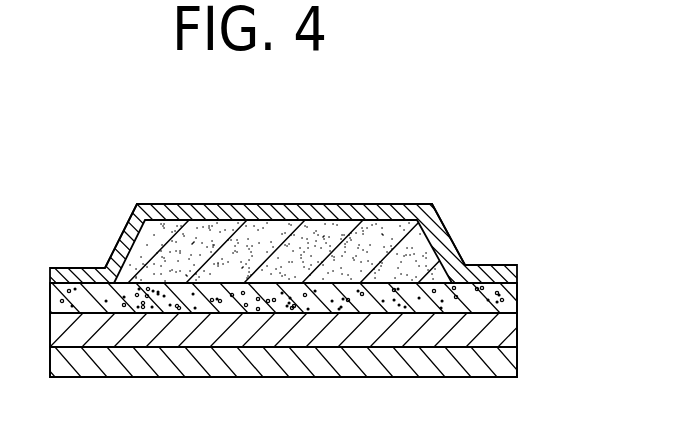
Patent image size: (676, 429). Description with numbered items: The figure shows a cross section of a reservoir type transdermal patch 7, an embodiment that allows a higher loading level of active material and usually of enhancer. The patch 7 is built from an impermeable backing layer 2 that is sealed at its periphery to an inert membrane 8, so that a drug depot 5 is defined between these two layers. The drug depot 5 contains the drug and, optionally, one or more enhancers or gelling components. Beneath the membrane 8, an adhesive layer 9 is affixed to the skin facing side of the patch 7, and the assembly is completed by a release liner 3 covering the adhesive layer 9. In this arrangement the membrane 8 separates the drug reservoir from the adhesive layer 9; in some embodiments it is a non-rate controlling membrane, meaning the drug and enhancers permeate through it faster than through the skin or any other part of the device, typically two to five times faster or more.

The impermeable backing layer 2 is at (158, 204).
The release liner 3 is at (117, 362).
The drug depot 5 is at (147, 258).
The patch 7 is at (410, 180).
The inert membrane 8 is at (490, 302).
The adhesive layer 9 is at (457, 328).